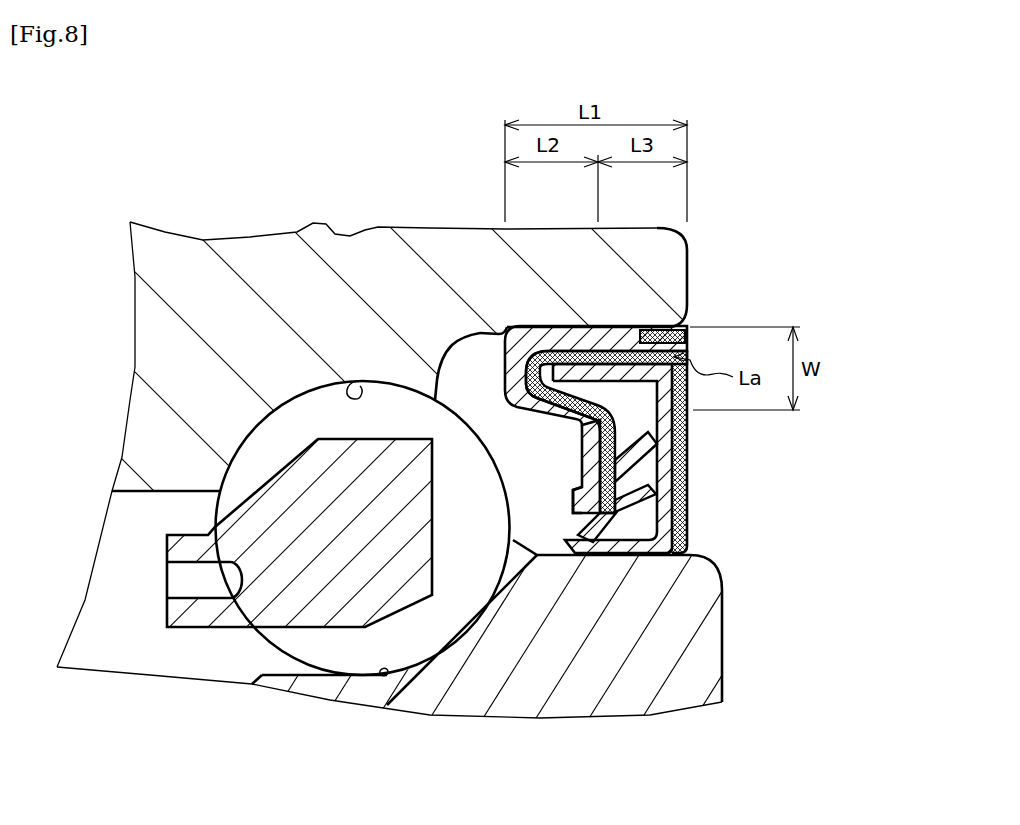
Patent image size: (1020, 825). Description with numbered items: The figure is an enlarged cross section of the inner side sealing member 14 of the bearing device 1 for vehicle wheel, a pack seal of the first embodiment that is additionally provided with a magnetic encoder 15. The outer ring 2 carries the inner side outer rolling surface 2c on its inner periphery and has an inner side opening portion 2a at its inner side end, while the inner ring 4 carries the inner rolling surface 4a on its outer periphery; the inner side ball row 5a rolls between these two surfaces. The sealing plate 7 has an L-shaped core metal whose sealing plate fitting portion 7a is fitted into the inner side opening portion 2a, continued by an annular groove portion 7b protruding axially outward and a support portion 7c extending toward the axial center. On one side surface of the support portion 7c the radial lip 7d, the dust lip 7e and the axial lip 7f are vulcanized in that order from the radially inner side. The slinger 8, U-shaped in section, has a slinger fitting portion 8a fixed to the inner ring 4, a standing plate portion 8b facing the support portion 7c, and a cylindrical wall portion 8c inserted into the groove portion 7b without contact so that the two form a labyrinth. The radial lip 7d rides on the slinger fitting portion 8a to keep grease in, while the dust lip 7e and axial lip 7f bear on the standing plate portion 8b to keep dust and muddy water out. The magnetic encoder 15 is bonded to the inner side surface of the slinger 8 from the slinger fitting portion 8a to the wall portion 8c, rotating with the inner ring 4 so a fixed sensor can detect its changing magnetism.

The bearing device for vehicle wheel 1 is at (69, 144).
The outer ring 2 is at (468, 181).
The inner side opening portion 2a is at (499, 334).
The inner side outer rolling surface 2c is at (358, 382).
The inner ring 4 is at (348, 752).
The inner rolling surface 4a is at (380, 674).
The inner side ball row 5a is at (230, 482).
The sealing plate 7 is at (596, 434).
The sealing plate fitting portion 7a is at (597, 427).
The groove portion 7b is at (577, 420).
The support portion 7c is at (636, 455).
The radial lip 7d is at (575, 527).
The dust lip 7e is at (636, 500).
The axial lip 7f is at (590, 484).
The slinger 8 is at (649, 441).
The slinger fitting portion 8a is at (703, 506).
The standing plate portion 8b is at (688, 467).
The wall portion 8c is at (685, 400).
The inner side sealing member 14 is at (800, 456).
The magnetic encoder 15 is at (652, 527).